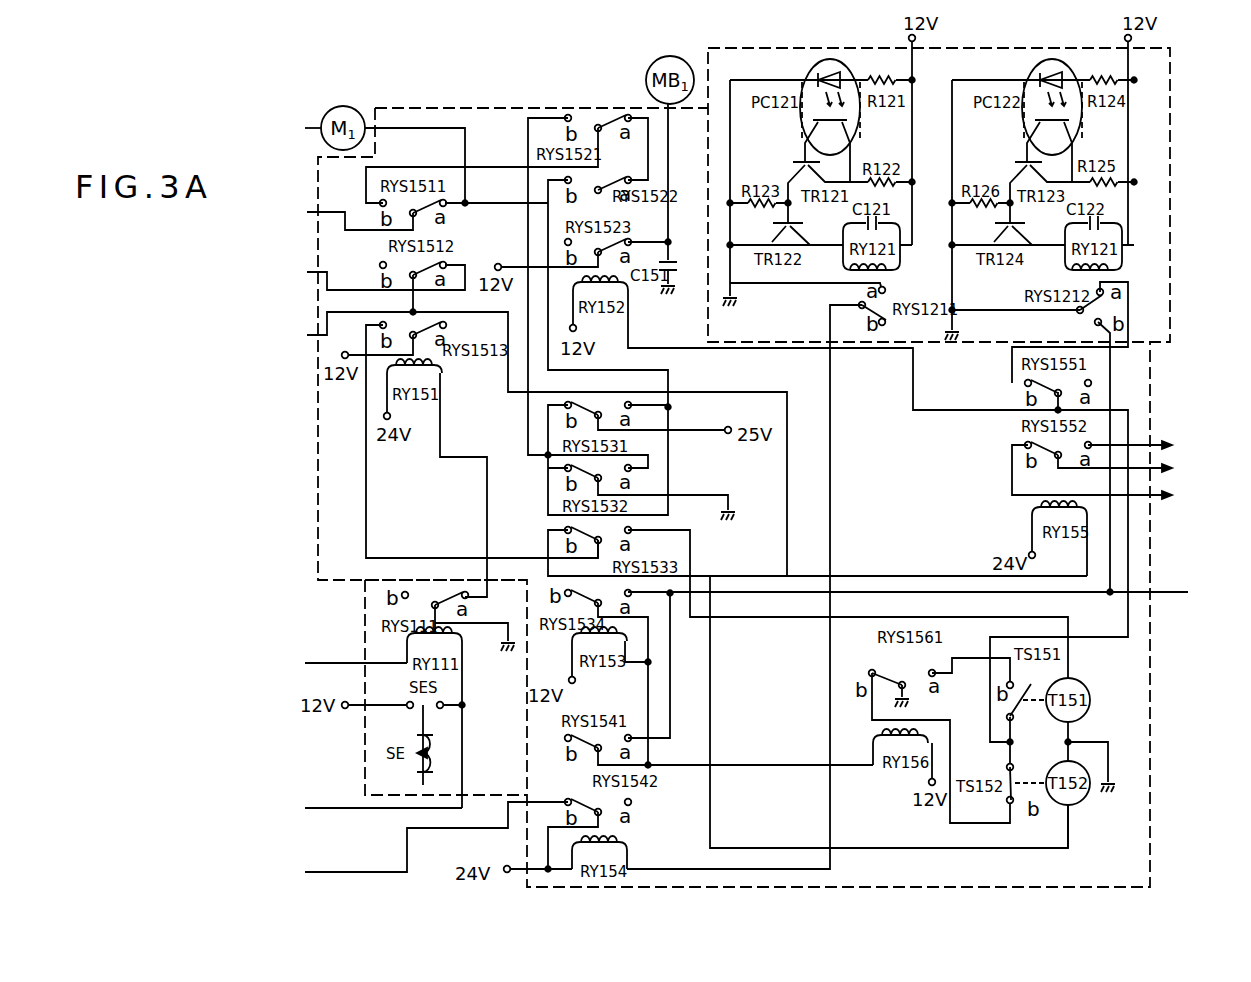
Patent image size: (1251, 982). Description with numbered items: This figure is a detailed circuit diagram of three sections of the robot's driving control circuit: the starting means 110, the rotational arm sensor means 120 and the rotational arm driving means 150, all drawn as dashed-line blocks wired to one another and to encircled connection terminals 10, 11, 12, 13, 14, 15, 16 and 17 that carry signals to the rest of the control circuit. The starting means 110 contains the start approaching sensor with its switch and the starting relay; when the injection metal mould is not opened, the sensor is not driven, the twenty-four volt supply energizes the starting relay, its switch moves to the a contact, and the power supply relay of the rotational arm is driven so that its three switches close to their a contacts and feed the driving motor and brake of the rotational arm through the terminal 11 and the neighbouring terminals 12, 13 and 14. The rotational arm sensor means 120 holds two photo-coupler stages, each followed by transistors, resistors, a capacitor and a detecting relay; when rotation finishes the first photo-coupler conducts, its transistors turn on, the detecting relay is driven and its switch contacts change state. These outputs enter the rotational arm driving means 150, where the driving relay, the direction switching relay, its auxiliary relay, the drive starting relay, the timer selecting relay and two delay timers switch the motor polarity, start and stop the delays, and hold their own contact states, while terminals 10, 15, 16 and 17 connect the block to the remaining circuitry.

The terminal to control unit 10 is at (336, 663).
The motor terminal 11 is at (293, 128).
The terminal 12 is at (340, 212).
The terminal 13 is at (366, 272).
The terminal 14 is at (527, 444).
The terminal 15 is at (363, 808).
The terminal 16 is at (416, 847).
The terminal 17 is at (928, 592).
The starting means 110 is at (365, 632).
The rotational arm sensor means 120 is at (1170, 302).
The rotational arm driving means 150 is at (1152, 692).